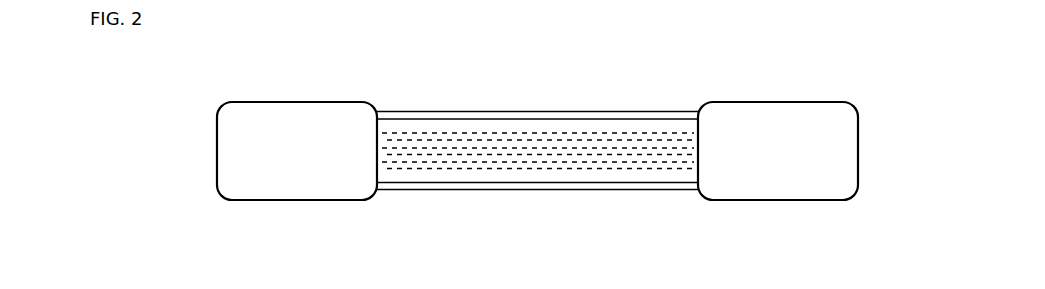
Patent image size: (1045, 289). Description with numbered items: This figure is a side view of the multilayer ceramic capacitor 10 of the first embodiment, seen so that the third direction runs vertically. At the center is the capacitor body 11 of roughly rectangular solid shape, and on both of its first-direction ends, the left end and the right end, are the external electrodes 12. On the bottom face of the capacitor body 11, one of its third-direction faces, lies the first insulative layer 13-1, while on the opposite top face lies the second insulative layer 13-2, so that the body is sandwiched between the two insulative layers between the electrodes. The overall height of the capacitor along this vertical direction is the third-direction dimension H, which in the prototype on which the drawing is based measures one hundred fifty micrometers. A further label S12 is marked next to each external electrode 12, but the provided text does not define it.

The multilayer ceramic capacitor 10 is at (214, 101).
The capacitor body 11 is at (430, 121).
The external electrodes 12 is at (217, 122).
The first insulative layer 13-1 is at (583, 187).
The second insulative layer 13-2 is at (580, 116).
The thickness of cushioning member S12 is at (535, 159).
The third-direction dimension H is at (858, 102).